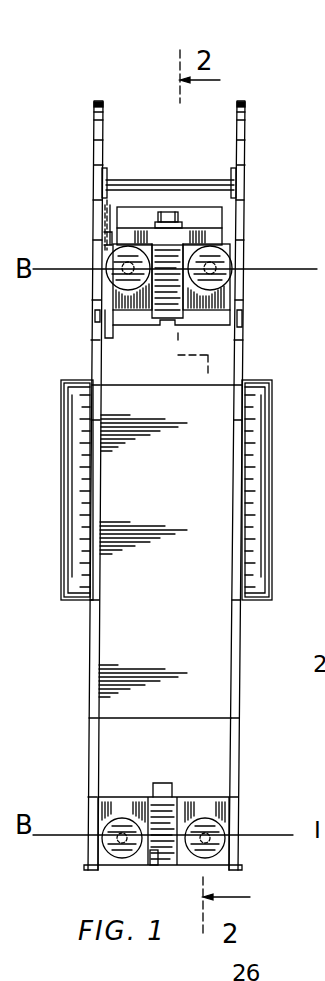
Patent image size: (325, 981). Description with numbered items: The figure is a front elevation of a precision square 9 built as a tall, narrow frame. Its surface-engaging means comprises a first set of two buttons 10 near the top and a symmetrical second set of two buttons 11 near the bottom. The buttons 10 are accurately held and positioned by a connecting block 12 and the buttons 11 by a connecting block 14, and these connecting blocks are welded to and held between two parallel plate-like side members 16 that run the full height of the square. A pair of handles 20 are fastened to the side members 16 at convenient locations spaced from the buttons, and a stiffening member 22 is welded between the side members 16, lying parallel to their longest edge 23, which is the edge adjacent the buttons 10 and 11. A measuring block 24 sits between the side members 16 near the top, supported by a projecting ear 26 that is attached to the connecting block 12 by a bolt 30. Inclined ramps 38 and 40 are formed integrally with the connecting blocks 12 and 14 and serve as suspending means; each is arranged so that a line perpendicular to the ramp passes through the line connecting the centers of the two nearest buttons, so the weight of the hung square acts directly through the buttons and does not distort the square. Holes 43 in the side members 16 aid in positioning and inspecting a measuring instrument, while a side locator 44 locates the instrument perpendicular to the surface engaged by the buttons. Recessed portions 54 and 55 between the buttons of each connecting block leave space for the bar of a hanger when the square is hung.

The square 9 is at (142, 86).
The first set of two buttons 10 is at (110, 263).
The second set of two buttons 11 is at (121, 830).
The connecting block 12 is at (232, 302).
The connecting block 14 is at (223, 810).
The side members 16 is at (100, 101).
The handles 20 is at (263, 475).
The stiffening member 22 is at (208, 660).
The longest edge 23 is at (235, 570).
The measuring block 24 is at (144, 193).
The projecting ear 26 is at (122, 238).
The bolt 30 is at (172, 210).
The inclined ramp 38 is at (167, 323).
The inclined ramp 40 is at (165, 790).
The hole 43 is at (95, 331).
The side locator 44 is at (100, 198).
The recessed portion 54 is at (162, 297).
The recessed portion 55 is at (155, 855).